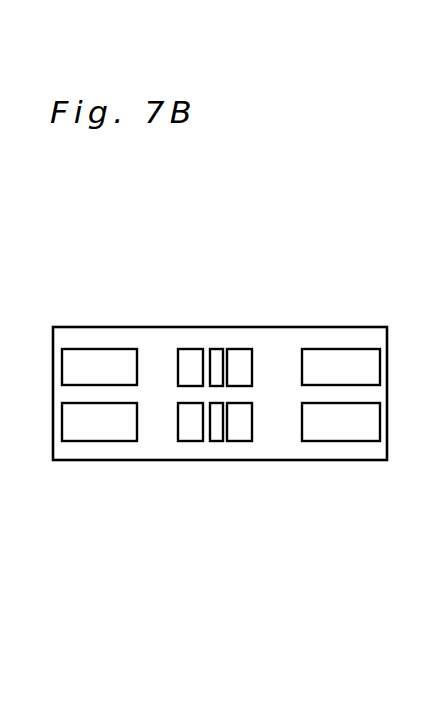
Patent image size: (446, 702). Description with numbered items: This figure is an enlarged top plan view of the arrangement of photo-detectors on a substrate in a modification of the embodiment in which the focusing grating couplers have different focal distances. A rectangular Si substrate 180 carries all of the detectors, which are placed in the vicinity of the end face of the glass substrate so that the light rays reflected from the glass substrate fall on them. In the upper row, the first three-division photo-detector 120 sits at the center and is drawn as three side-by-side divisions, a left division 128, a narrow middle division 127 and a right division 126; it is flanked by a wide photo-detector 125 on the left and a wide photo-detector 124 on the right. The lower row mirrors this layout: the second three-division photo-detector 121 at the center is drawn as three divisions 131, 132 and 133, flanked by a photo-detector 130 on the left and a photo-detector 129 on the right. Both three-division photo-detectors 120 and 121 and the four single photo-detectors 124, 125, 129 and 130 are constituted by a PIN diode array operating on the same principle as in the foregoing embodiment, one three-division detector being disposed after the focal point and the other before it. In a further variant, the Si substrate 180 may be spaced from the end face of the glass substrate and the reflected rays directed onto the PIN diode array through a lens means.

The Si substrate 180 is at (277, 340).
The three-division photo-detector 120 is at (300, 233).
The three-division photo-detector 121 is at (307, 545).
The photo-detector 124 is at (336, 362).
The photo-detector 125 is at (89, 363).
The electrode 126 is at (239, 356).
The electrode 127 is at (217, 356).
The electrode 128 is at (186, 356).
The photo-detector 129 is at (344, 430).
The photo-detector 130 is at (93, 430).
The electrode 131 is at (187, 435).
The electrode 132 is at (216, 435).
The electrode 133 is at (241, 435).